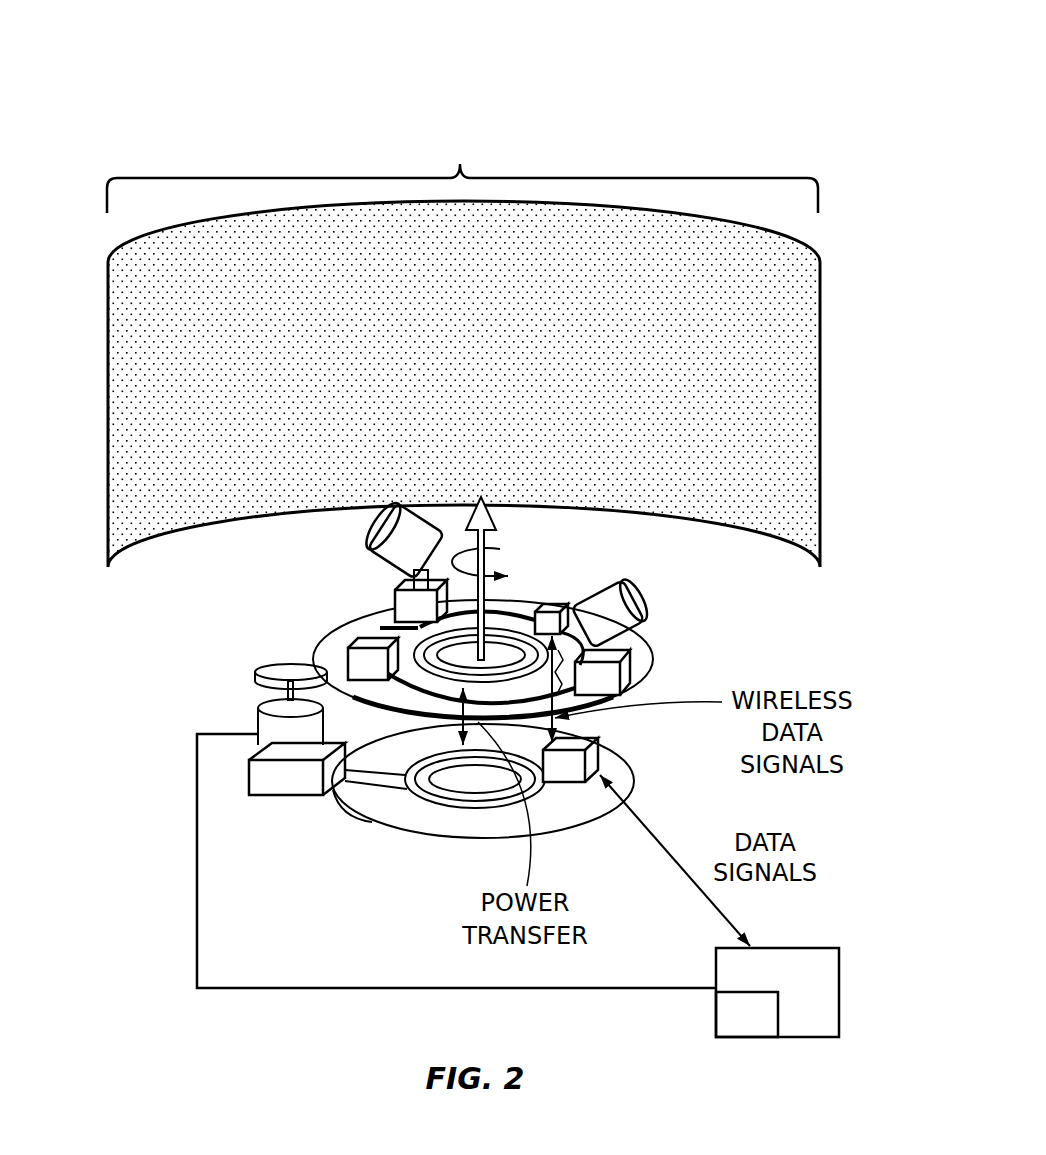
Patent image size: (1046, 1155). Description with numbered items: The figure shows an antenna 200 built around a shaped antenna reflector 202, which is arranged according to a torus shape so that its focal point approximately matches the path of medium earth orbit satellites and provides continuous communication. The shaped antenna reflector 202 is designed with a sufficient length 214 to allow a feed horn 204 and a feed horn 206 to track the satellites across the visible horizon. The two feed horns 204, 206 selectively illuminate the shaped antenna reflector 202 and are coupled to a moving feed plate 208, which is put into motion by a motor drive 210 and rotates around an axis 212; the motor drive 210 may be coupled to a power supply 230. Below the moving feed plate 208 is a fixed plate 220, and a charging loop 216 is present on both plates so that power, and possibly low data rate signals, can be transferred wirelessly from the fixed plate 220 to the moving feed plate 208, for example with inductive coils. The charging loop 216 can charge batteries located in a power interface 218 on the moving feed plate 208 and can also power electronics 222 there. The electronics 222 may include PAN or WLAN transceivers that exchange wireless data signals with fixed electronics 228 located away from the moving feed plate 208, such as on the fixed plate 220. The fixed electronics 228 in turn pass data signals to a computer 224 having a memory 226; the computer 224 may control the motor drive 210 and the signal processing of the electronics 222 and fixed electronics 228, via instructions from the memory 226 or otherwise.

The antenna 200 is at (747, 70).
The shaped antenna reflector 202 is at (108, 346).
The feed horn 204 is at (378, 556).
The feed horn 206 is at (645, 630).
The moving feed plate 208 is at (328, 615).
The motor drive 210 is at (253, 717).
The axis 212 is at (489, 550).
The length 214 is at (462, 172).
The charging loop 216 is at (505, 630).
The power interface 218 is at (343, 652).
The fixed plate 220 is at (563, 827).
The electronics 222 is at (557, 600).
The computer 224 is at (816, 1037).
The memory 226 is at (747, 992).
The fixed electronics 228 is at (595, 752).
The power supply 230 is at (286, 777).